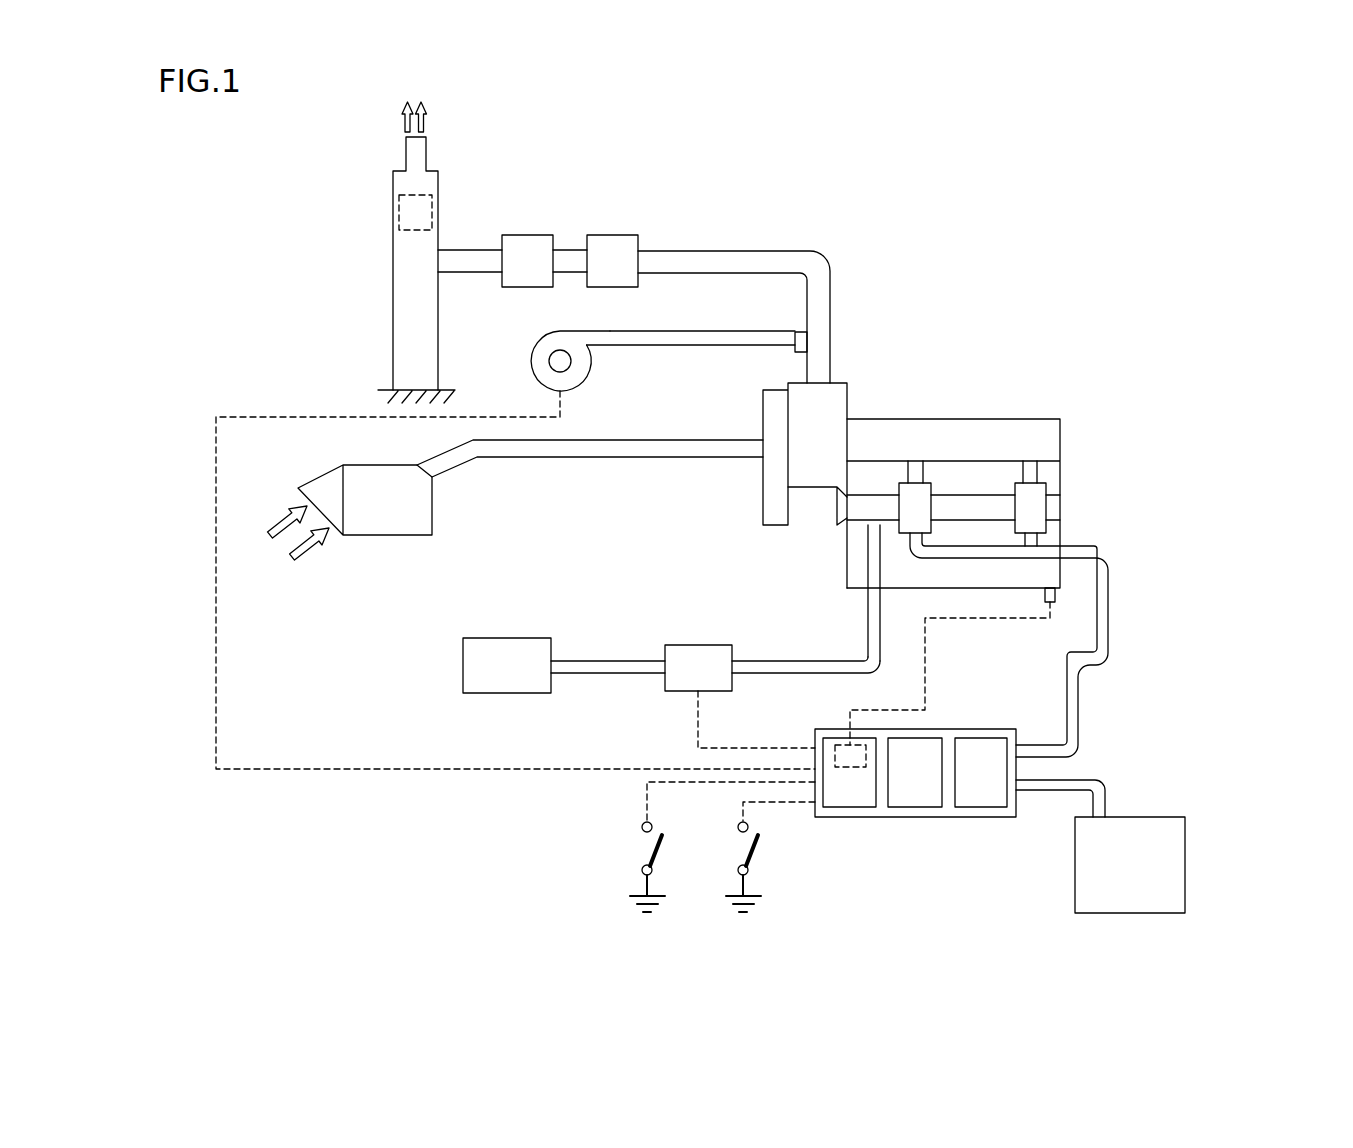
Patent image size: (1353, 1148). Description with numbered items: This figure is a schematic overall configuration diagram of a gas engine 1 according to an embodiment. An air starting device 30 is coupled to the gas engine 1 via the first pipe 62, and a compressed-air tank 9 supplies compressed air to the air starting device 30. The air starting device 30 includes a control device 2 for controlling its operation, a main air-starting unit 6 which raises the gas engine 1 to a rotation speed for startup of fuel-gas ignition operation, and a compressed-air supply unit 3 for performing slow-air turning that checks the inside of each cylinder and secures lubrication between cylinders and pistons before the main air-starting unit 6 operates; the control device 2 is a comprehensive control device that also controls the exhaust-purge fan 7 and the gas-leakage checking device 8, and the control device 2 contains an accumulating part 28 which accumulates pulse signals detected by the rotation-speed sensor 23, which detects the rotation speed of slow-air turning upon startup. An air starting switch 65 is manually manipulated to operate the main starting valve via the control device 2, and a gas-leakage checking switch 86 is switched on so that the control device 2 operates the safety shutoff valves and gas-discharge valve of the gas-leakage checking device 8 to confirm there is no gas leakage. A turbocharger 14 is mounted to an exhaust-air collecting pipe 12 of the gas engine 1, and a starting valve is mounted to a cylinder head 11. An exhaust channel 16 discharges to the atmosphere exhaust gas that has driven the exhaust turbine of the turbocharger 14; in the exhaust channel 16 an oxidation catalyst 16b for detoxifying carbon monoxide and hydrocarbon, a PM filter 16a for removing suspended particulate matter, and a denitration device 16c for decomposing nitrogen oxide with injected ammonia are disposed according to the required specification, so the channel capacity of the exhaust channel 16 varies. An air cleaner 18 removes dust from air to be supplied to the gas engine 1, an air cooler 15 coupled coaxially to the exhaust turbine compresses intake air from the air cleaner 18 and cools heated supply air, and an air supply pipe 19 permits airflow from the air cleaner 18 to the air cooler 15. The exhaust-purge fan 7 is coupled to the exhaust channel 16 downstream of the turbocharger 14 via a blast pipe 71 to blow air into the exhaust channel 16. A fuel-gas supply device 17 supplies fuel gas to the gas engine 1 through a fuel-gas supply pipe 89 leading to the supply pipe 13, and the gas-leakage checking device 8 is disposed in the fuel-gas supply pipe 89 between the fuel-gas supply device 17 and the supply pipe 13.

The gas engine 1 is at (983, 469).
The control device 2 is at (833, 803).
The compressed-air supply unit 3 is at (912, 790).
The main air-starting unit 6 is at (980, 790).
The exhaust-purge fan 7 is at (591, 368).
The gas-leakage checking device 8 is at (685, 645).
The compressed-air tank 9 is at (1186, 858).
The cylinder head 11 is at (1048, 497).
The exhaust-air collecting pipe 12 is at (962, 432).
The supply pipe 13 is at (998, 512).
The turbocharger 14 is at (849, 391).
The air cooler 15 is at (810, 520).
The exhaust channel 16 is at (680, 250).
The PM filter 16a is at (610, 235).
The oxidation catalyst 16b is at (528, 235).
The denitration device 16c is at (428, 190).
The fuel-gas supply device 17 is at (463, 665).
The air cleaner 18 is at (433, 508).
The air supply pipe 19 is at (597, 460).
The rotation-speed sensor 23 is at (1057, 596).
The accumulating part 28 is at (838, 768).
The air starting device 30 is at (903, 824).
The first pipe 62 is at (1110, 637).
The air starting switch 65 is at (736, 873).
The blast pipe 71 is at (688, 333).
The gas-leakage checking switch 86 is at (640, 873).
The fuel-gas supply pipe 89 is at (773, 676).